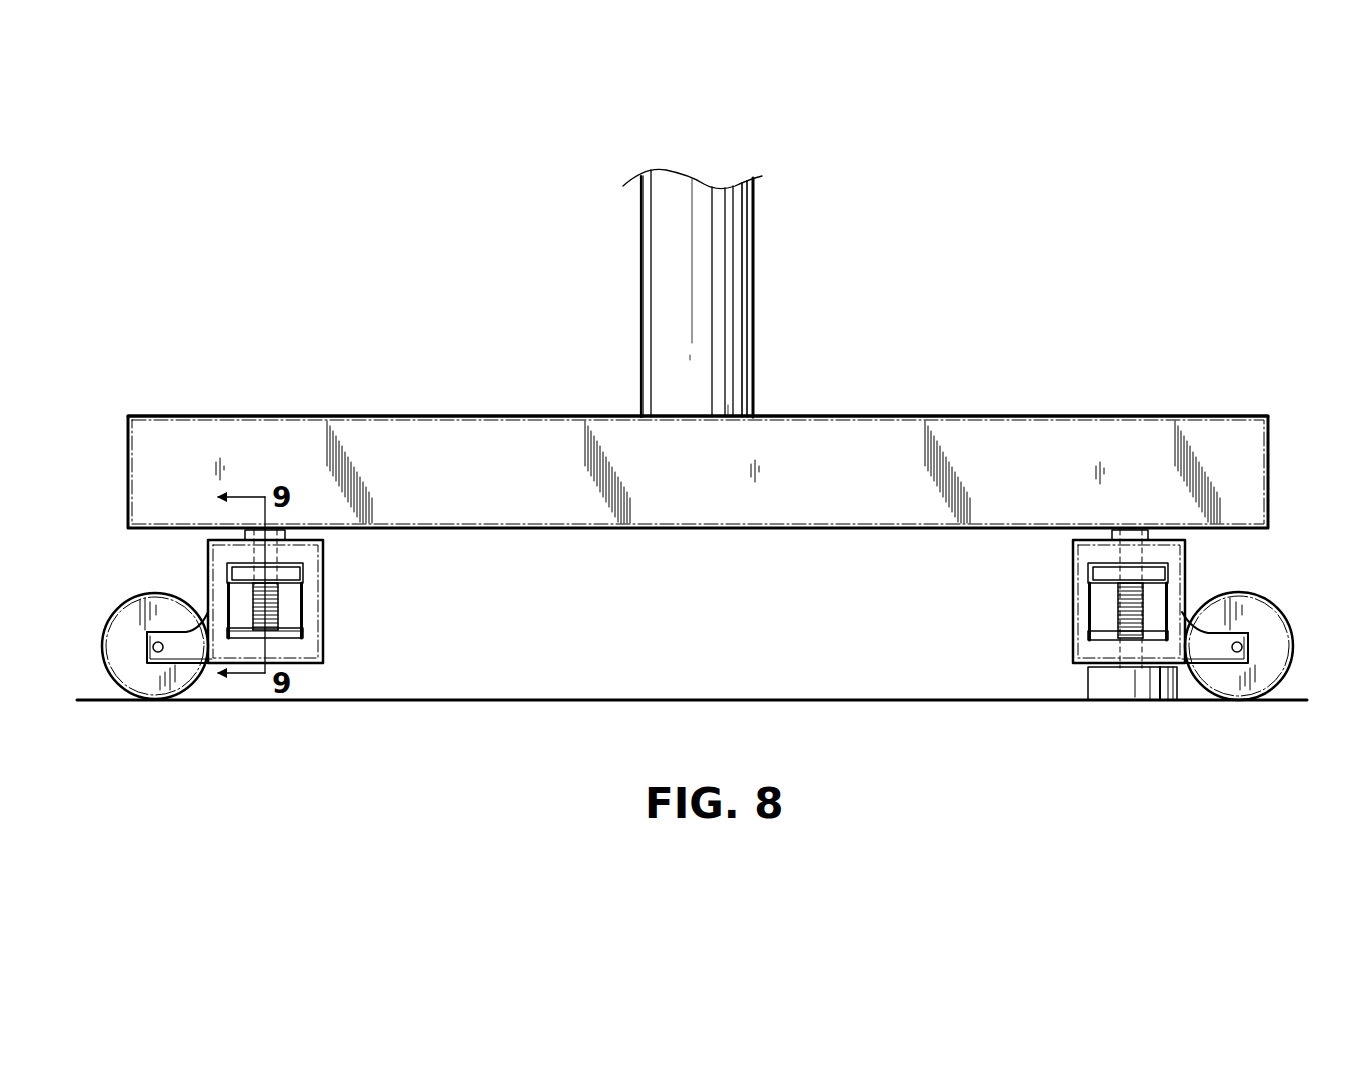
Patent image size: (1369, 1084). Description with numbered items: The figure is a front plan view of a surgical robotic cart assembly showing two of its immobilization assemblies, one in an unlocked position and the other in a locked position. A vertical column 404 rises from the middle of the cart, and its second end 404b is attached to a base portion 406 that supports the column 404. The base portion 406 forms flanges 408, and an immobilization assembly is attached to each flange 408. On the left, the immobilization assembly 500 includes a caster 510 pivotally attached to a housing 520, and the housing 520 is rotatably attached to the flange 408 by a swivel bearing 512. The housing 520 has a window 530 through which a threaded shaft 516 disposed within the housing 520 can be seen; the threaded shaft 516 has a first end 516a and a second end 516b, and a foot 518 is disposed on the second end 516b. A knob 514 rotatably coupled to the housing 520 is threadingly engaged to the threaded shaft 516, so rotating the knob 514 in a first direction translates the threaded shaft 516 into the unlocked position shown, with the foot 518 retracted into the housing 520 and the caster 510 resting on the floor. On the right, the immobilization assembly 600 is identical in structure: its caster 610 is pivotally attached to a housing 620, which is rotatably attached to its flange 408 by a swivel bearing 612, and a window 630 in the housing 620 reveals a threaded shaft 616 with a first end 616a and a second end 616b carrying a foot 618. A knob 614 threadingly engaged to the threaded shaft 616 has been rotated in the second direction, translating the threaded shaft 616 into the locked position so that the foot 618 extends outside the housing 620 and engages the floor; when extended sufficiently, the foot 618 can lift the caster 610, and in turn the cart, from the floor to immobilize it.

The vertical column 404 is at (737, 232).
The second end 404b is at (728, 405).
The base portion 406 is at (953, 389).
The flange 408 is at (162, 415).
The immobilization assembly 500 is at (241, 603).
The caster 510 is at (120, 605).
The swivel bearing 512 is at (242, 533).
The knob 514 is at (240, 575).
The threaded shaft 516 is at (275, 605).
The first end 516a is at (273, 526).
The second end 516b is at (292, 627).
The foot 518 is at (303, 637).
The housing 520 is at (310, 550).
The window 530 is at (300, 587).
The immobilization assembly 600 is at (1172, 599).
The caster 610 is at (1272, 623).
The swivel bearing 612 is at (1150, 532).
The knob 614 is at (1102, 572).
The threaded shaft 616 is at (1127, 597).
The first end 616a is at (1123, 560).
The second end 616b is at (1117, 660).
The foot 618 is at (1103, 682).
The housing 620 is at (1172, 560).
The window 630 is at (1153, 602).